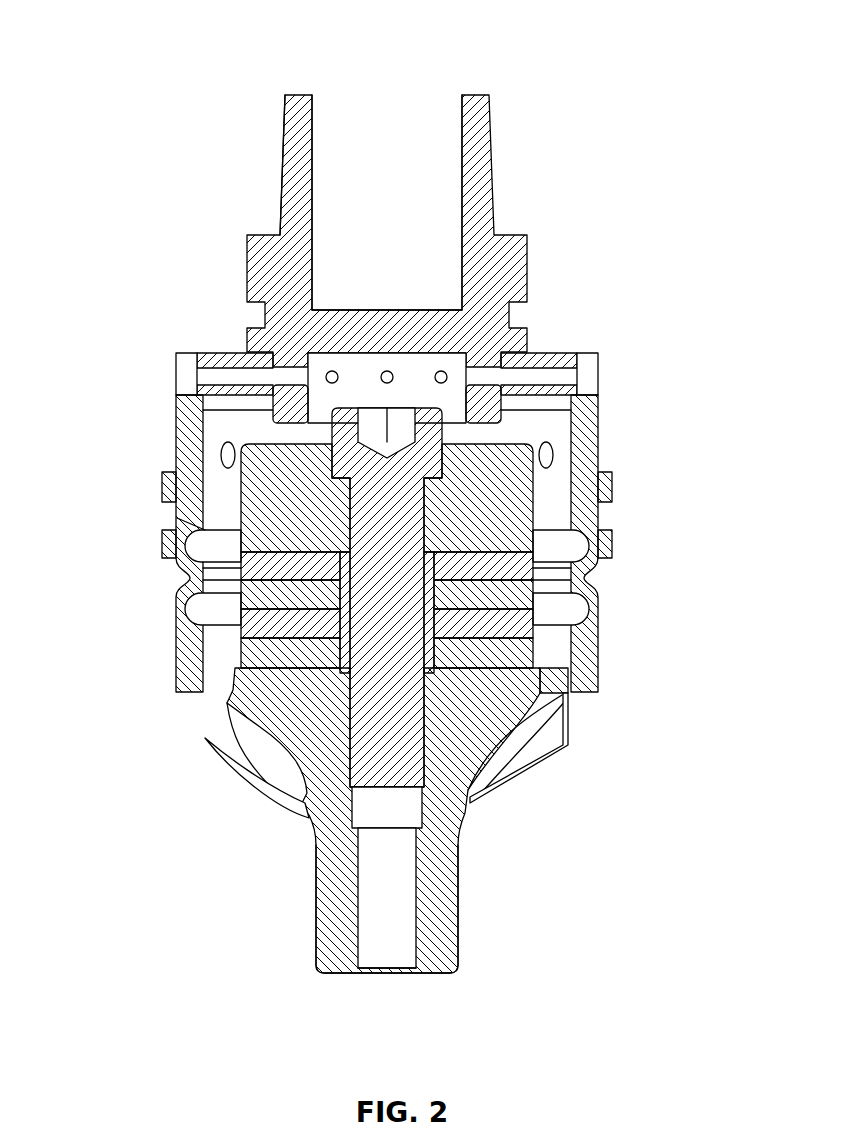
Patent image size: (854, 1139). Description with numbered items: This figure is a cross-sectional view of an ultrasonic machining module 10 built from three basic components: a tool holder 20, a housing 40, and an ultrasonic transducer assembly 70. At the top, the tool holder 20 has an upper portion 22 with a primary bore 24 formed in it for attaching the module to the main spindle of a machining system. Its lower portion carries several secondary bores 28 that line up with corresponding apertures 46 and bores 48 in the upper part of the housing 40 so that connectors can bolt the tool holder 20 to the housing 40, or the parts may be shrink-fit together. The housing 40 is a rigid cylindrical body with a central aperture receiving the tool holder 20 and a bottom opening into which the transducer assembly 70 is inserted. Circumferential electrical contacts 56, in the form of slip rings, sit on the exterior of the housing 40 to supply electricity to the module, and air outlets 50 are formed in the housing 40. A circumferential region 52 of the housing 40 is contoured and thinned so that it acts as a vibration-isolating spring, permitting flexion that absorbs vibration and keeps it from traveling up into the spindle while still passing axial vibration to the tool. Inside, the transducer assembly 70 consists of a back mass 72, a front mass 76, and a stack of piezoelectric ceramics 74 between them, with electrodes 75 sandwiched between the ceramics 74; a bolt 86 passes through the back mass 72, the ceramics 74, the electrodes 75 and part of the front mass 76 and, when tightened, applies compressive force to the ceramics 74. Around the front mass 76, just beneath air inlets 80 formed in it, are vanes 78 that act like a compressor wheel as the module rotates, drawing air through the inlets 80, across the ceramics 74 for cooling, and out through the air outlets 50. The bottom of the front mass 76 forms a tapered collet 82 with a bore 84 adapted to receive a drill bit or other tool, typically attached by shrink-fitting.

The ultrasonic machining module 10 is at (118, 36).
The tool holder 20 is at (503, 151).
The upper portion 22 is at (283, 185).
The primary bore 24 is at (312, 95).
The secondary bores 28 is at (292, 367).
The housing 40 is at (607, 659).
The apertures 46 is at (180, 375).
The bores 48 is at (210, 372).
The air outlets 50 is at (221, 450).
The circumferential region 52 is at (168, 585).
The circumferential electrical contacts 56 is at (163, 487).
The ultrasonic transducer assembly 70 is at (470, 904).
The back mass 72 is at (533, 515).
The piezoelectric ceramics 74 is at (242, 632).
The electrodes 75 is at (175, 512).
The front mass 76 is at (540, 745).
The vanes 78 is at (245, 772).
The air inlets 80 is at (222, 703).
The tapered collet 82 is at (460, 955).
The bore 84 is at (418, 970).
The bolt 86 is at (370, 792).